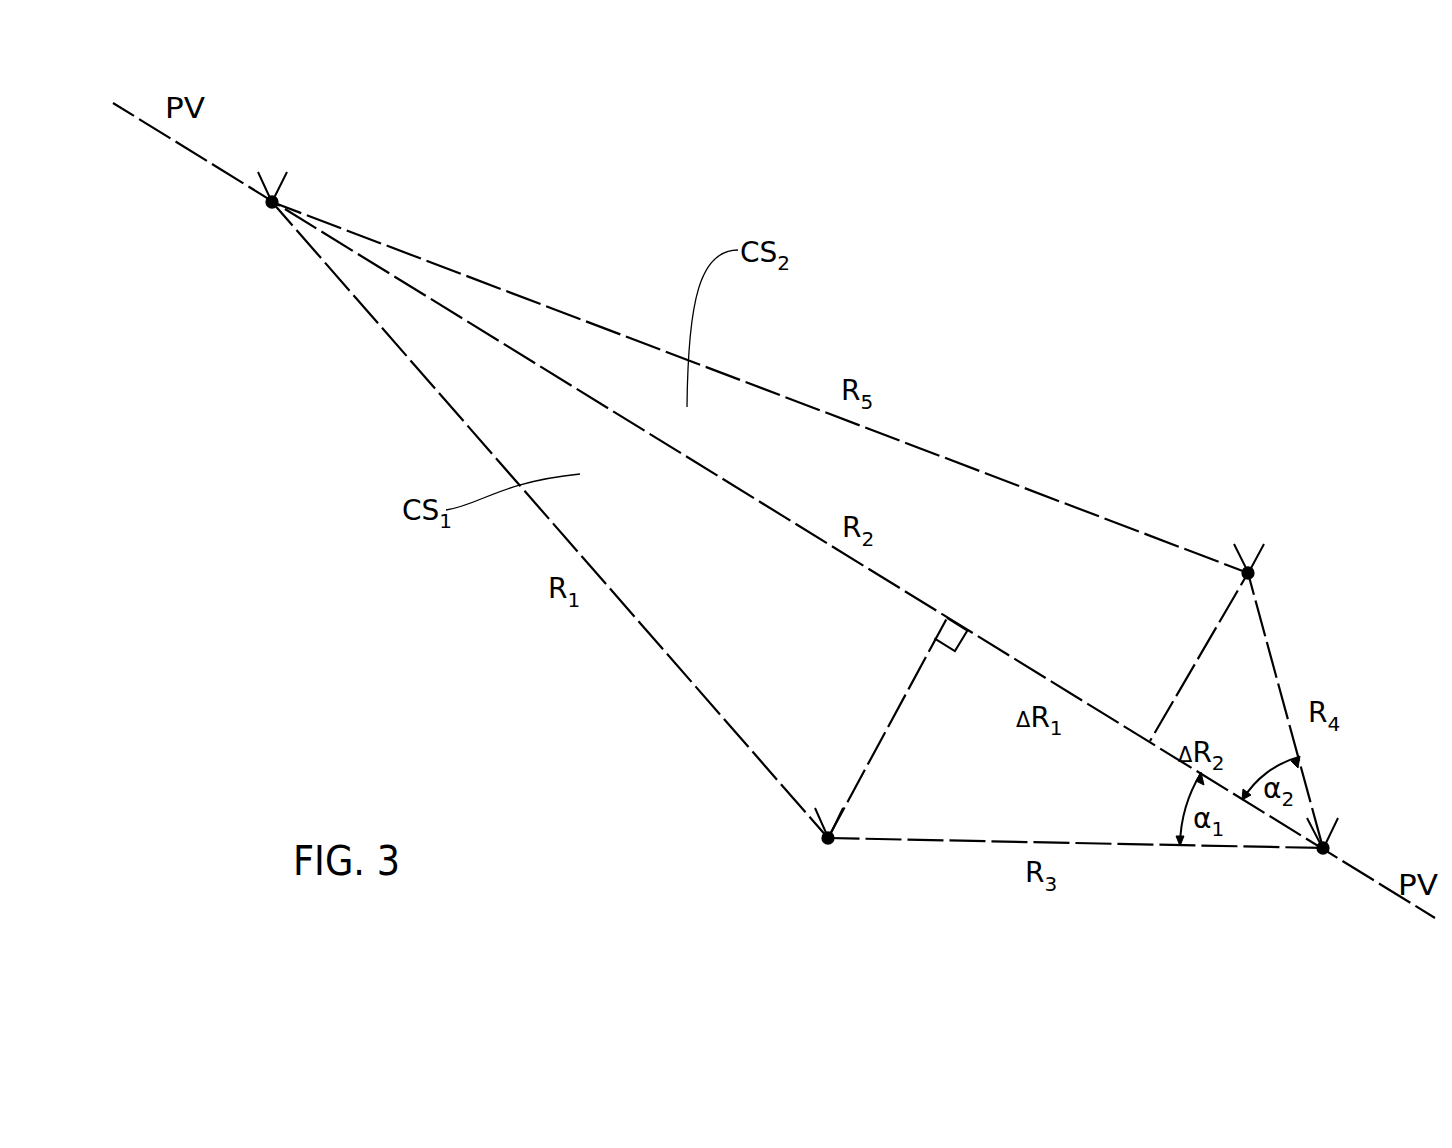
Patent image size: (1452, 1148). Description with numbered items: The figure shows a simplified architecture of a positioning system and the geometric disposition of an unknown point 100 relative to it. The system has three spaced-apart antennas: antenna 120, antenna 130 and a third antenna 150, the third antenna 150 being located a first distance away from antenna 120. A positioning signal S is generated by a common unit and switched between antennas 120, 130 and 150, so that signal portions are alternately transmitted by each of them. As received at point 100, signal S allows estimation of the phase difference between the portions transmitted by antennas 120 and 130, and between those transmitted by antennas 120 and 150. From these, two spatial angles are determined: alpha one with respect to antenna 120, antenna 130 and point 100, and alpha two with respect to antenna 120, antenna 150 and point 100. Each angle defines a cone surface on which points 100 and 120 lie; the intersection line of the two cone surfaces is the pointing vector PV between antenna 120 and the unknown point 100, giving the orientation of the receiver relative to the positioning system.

The point 100 is at (264, 204).
The antenna 120 is at (1320, 856).
The antenna 130 is at (823, 840).
The third antenna 150 is at (1254, 579).